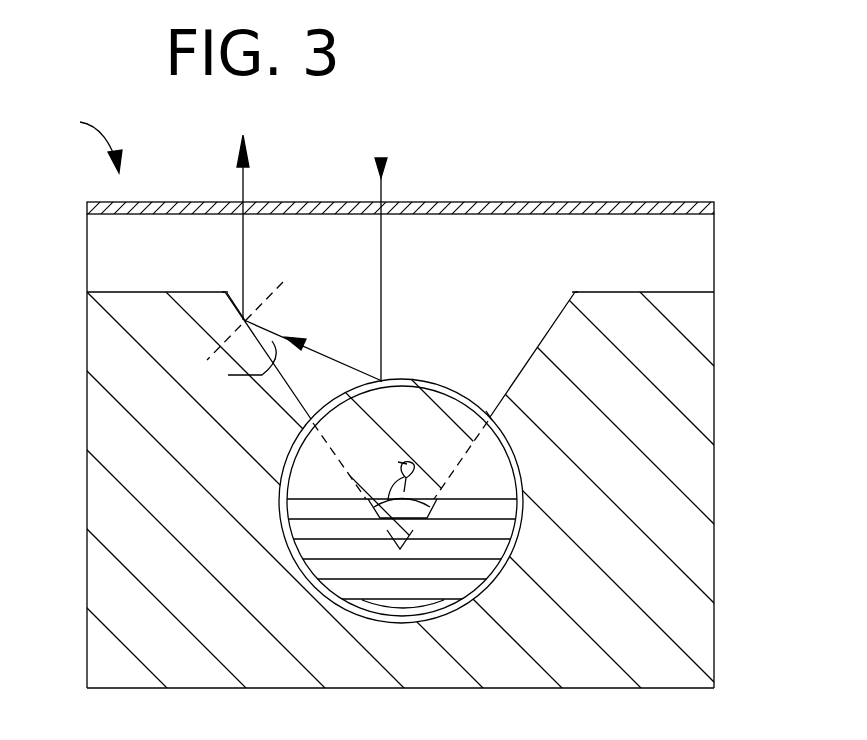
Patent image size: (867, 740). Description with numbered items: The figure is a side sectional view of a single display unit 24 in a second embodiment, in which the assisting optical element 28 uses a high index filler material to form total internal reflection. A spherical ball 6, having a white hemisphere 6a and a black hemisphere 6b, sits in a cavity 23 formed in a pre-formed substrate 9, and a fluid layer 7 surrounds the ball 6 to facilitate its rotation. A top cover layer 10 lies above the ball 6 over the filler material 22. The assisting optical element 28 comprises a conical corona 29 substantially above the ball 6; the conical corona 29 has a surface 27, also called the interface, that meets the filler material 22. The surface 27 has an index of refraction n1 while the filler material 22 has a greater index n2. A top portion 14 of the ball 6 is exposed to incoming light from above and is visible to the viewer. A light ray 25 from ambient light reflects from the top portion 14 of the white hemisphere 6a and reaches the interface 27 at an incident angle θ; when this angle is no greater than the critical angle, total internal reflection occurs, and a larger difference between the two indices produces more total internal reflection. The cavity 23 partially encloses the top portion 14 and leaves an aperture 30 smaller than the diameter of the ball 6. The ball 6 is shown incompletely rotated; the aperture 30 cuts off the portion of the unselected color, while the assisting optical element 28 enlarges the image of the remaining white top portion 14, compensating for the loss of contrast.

The spherical ball 6 is at (387, 382).
The white hemisphere 6a is at (400, 408).
The black hemisphere 6b is at (460, 547).
The fluid layer 7 is at (517, 463).
The pre-formed substrate 9 is at (647, 573).
The top cover layer 10 is at (607, 202).
The top portion of the ball 14 is at (437, 408).
The filler material 22 is at (343, 243).
The cavity 23 is at (300, 573).
The single display unit 24 is at (86, 140).
The light ray 25 is at (243, 183).
The surface 27 is at (250, 314).
The assisting optical element 28 is at (518, 315).
The conical corona 29 is at (232, 298).
The aperture 30 is at (490, 407).